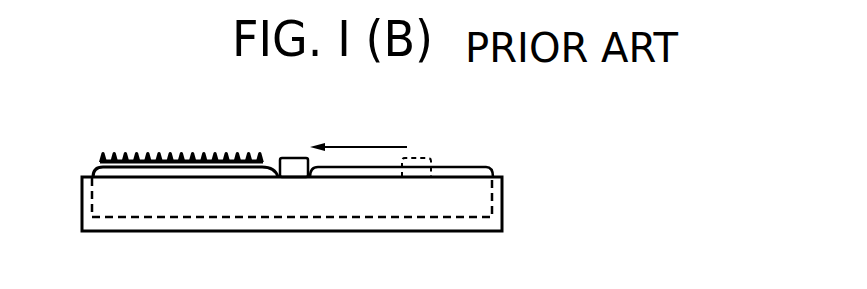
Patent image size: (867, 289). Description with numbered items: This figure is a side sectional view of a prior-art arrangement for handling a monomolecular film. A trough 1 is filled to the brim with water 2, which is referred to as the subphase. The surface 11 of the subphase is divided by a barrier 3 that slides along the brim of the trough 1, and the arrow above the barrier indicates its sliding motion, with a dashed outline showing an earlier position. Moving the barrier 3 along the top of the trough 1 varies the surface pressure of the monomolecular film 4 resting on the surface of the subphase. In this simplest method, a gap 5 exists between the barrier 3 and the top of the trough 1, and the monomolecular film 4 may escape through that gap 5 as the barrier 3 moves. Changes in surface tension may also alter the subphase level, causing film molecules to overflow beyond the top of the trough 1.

The trough 1 is at (503, 193).
The water 2 is at (157, 203).
The barrier 3 is at (292, 158).
The monomolecular film 4 is at (263, 143).
The gap 5 is at (274, 182).
The surface of the subphase 11 is at (455, 167).